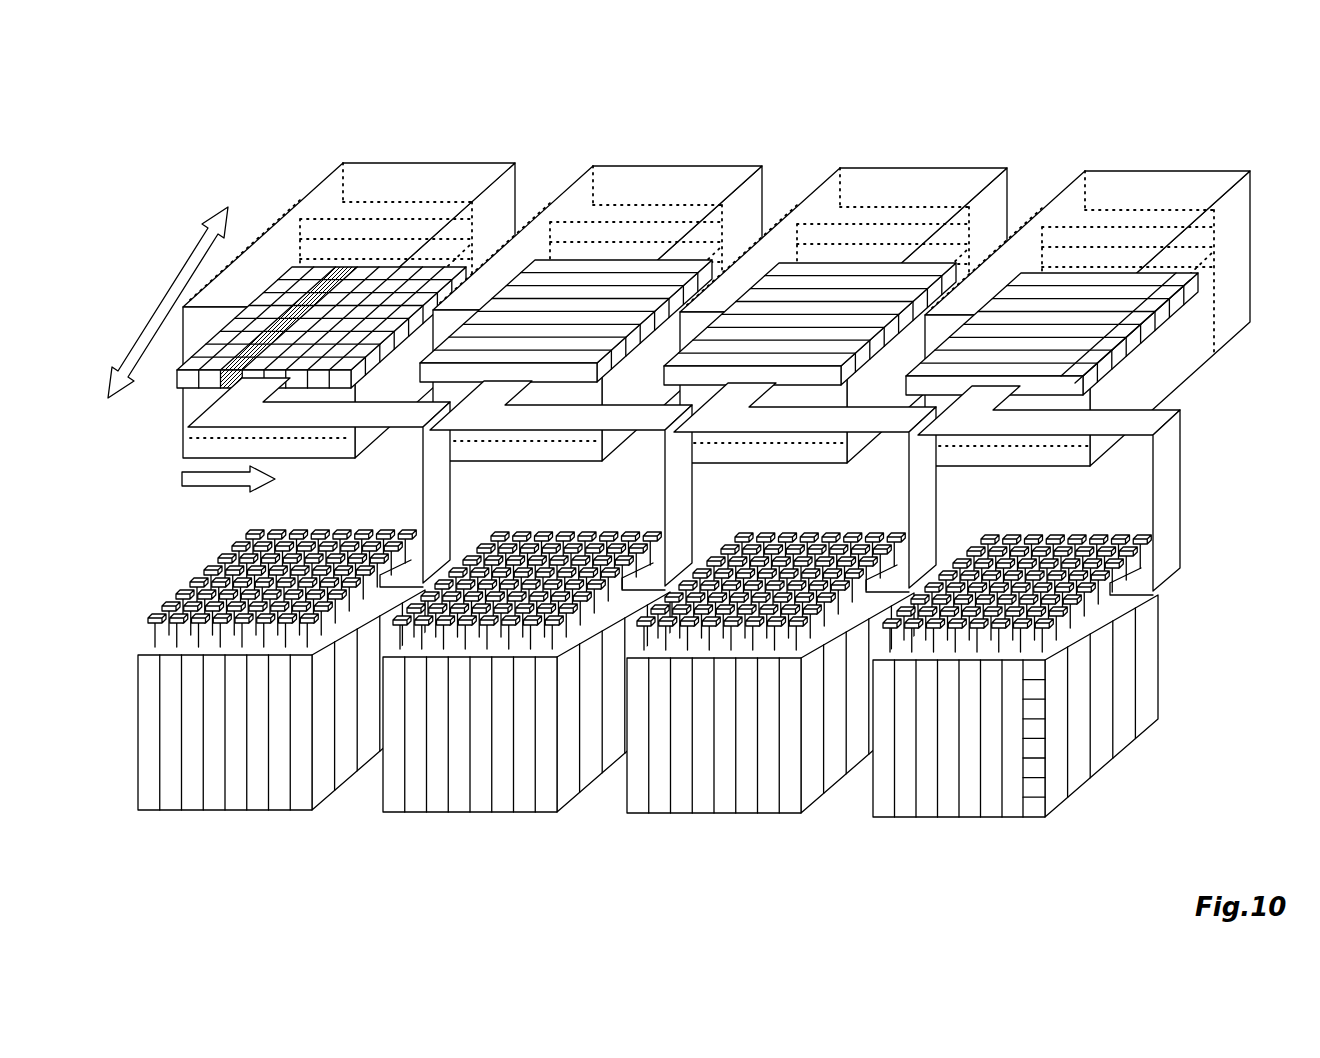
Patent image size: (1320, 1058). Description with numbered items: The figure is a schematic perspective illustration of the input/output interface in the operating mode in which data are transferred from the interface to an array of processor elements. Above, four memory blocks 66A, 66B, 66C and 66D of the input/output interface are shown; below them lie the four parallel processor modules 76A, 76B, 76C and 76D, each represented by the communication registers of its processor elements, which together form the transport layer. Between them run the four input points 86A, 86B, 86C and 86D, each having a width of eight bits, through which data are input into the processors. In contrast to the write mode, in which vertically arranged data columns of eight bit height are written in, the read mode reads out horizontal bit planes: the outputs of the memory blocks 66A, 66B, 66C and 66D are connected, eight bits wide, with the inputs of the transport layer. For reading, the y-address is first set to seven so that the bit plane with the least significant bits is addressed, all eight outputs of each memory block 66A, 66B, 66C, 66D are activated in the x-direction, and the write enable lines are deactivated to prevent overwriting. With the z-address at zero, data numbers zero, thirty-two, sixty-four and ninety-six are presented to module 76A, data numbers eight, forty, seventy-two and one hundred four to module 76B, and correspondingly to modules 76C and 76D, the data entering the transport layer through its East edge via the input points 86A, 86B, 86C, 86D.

The memory block 66A is at (430, 178).
The memory block 66B is at (668, 185).
The memory block 66C is at (893, 185).
The memory block 66D is at (1143, 185).
The parallel processor module 76A is at (148, 760).
The parallel processor module 76B is at (420, 812).
The parallel processor module 76C is at (700, 818).
The parallel processor module 76D is at (957, 818).
The input point 86A is at (406, 572).
The input point 86B is at (653, 572).
The input point 86C is at (902, 572).
The input point 86D is at (1147, 572).